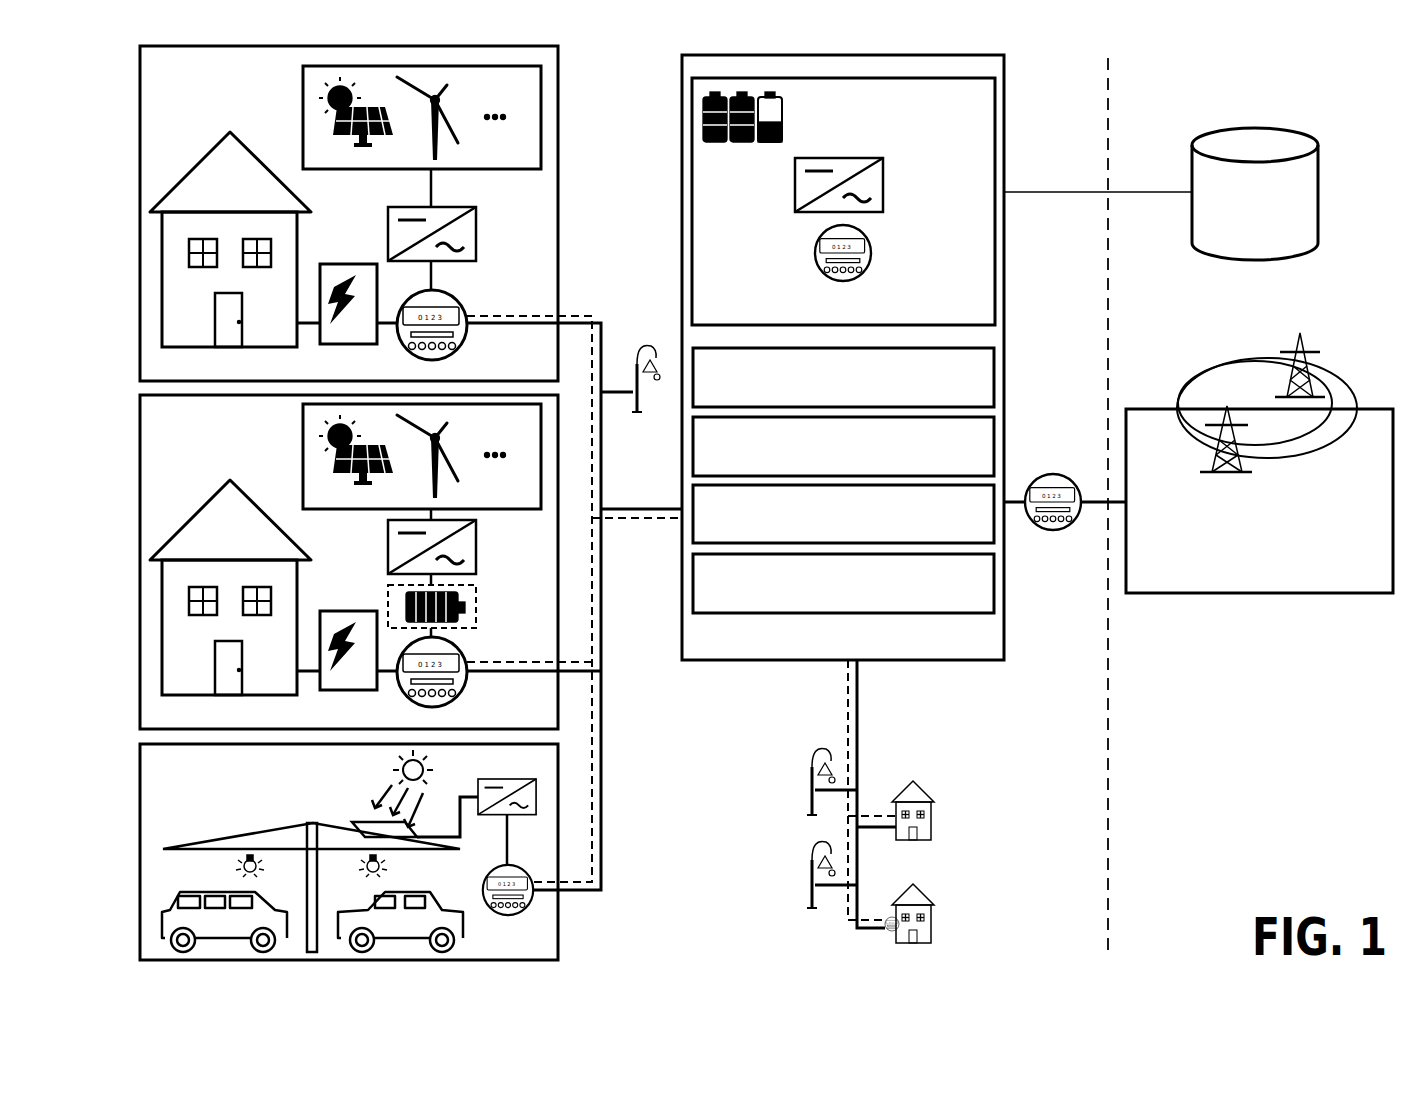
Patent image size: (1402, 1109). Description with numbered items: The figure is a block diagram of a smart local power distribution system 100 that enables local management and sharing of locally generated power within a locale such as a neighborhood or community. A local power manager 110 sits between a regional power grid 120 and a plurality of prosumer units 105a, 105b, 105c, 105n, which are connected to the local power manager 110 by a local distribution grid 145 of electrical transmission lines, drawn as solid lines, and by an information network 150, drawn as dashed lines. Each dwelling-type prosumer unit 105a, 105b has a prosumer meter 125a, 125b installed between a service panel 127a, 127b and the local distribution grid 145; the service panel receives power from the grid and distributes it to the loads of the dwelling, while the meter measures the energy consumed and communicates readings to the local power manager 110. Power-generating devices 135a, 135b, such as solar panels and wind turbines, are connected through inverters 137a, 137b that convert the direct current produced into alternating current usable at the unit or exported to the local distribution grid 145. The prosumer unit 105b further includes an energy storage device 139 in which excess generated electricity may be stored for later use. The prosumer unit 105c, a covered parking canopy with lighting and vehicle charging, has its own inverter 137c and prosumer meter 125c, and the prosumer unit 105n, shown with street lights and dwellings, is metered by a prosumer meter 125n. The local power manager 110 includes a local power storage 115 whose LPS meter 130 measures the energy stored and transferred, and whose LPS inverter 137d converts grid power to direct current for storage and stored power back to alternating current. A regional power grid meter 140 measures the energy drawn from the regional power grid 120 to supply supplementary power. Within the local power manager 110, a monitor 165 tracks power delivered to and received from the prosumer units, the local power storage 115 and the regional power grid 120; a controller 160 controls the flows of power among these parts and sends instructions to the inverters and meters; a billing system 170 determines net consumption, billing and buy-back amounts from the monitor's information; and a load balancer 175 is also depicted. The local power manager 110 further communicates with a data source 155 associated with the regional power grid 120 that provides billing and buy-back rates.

The smart local power distribution system 100 is at (1037, 60).
The prosumer unit 105a is at (349, 213).
The prosumer unit 105b is at (349, 562).
The prosumer unit 105c is at (349, 852).
The prosumer unit 105n is at (932, 929).
The local power manager 110 is at (843, 357).
The local power storage 115 is at (843, 201).
The regional power grid 120 is at (1259, 463).
The prosumer meter 125a is at (403, 344).
The prosumer meter 125b is at (403, 691).
The prosumer meter 125c is at (484, 887).
The prosumer meter 125n is at (888, 932).
The service panel 127a is at (339, 253).
The service panel 127b is at (339, 600).
The LPS meter 130 is at (872, 248).
The power-generating device 135a is at (422, 117).
The power-generating device 135b is at (422, 456).
The inverter 137a is at (477, 232).
The inverter 137b is at (477, 545).
The inverter 137c is at (517, 779).
The LPS inverter 137d is at (884, 182).
The energy storage device 139 is at (477, 605).
The RPG meter 140 is at (1066, 476).
The local distribution grid 145 is at (602, 335).
The information network 150 is at (655, 520).
The data source 155 is at (1161, 194).
The controller 160 is at (843, 377).
The monitor 165 is at (843, 446).
The billing system 170 is at (843, 514).
The load balancer 175 is at (843, 583).